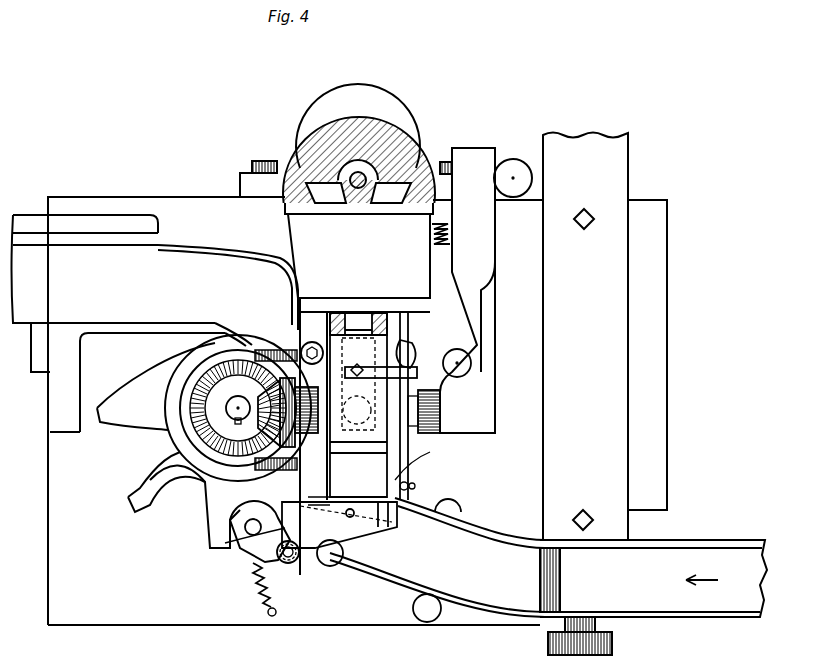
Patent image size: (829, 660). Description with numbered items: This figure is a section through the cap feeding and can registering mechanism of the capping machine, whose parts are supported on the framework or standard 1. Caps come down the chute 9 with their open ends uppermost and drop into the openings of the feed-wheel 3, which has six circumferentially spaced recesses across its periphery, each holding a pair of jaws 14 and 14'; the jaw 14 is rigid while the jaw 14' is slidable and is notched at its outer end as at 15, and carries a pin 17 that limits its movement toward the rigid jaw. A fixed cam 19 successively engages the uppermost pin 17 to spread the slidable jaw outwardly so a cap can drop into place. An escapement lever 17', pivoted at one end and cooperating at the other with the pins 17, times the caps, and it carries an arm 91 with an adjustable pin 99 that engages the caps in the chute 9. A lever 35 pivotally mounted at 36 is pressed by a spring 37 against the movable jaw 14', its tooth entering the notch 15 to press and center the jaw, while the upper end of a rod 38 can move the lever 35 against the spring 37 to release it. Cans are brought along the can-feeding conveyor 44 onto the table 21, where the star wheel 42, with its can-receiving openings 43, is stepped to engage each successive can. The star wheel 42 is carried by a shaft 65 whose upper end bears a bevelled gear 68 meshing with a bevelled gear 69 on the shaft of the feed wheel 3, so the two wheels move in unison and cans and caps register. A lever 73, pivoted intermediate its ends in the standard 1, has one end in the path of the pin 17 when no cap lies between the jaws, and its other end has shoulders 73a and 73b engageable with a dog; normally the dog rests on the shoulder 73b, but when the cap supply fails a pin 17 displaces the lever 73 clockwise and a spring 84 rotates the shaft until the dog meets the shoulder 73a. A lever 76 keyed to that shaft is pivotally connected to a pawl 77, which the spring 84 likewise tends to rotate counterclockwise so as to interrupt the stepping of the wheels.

The framework or standard 1 is at (420, 157).
The feed-wheel 3 is at (388, 462).
The chute 9 is at (357, 325).
The jaw 14 is at (339, 545).
The slidable jaw 14' is at (429, 466).
The notch 15 is at (415, 488).
The pin 17 is at (430, 406).
The escapement lever 17' is at (429, 348).
The cam 19 is at (438, 398).
The table 21 is at (98, 605).
The lever 35 is at (490, 288).
The pivot 36 is at (473, 363).
The spring 37 is at (450, 238).
The rod 38 is at (513, 168).
The star wheel 42 is at (136, 508).
The can-receiving openings 43 is at (134, 420).
The can-feeding conveyor 44 is at (686, 556).
The shaft 65 is at (238, 404).
The bevelled gear 68 is at (190, 412).
The bevelled gear 69 is at (276, 378).
The lever 73 is at (386, 524).
The shoulder 73a is at (245, 538).
The shoulder 73b is at (318, 494).
The lever 76 is at (250, 545).
The pawl 77 is at (244, 527).
The spring 84 is at (252, 582).
The arm 91 is at (379, 384).
The adjustable pin 99 is at (357, 364).